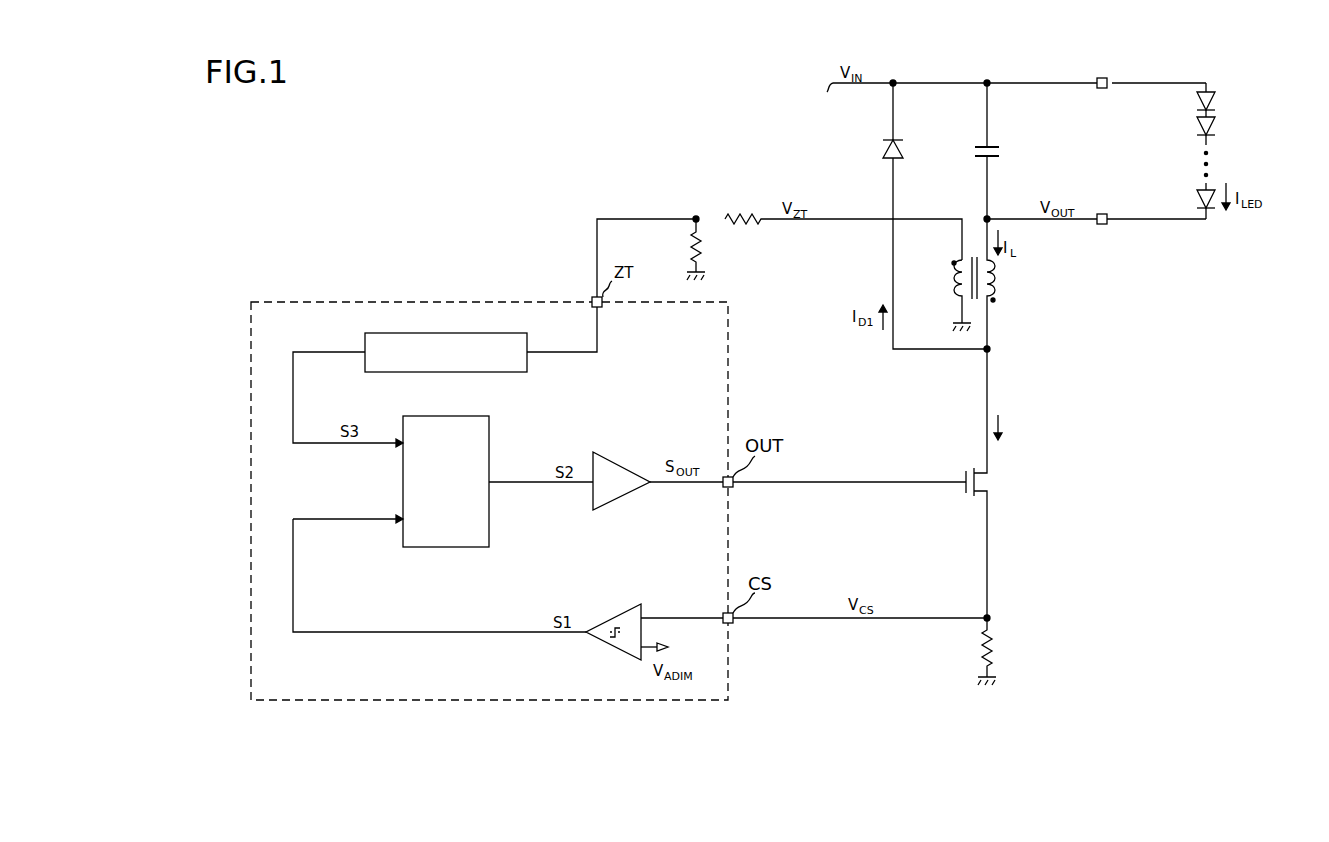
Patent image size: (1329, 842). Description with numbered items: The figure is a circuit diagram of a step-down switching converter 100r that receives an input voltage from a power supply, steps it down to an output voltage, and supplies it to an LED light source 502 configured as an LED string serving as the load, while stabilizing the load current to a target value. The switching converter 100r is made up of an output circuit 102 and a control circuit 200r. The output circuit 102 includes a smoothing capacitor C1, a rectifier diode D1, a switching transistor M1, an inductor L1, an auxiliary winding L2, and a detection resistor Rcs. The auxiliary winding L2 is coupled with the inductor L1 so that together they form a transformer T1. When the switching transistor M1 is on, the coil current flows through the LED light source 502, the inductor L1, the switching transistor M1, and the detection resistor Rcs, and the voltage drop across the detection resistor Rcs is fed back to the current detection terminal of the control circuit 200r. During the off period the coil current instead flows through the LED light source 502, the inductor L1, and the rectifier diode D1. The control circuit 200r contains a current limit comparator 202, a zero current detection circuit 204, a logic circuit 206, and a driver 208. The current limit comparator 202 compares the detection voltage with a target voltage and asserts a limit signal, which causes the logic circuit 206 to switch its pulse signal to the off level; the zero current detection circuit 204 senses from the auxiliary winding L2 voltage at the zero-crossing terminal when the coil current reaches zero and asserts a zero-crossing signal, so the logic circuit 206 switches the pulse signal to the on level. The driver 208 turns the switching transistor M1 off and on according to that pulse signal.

The switching converter 100r is at (239, 761).
The control circuit 200r is at (477, 700).
The output circuit 102 is at (964, 542).
The current limit comparator 202 is at (605, 660).
The zero current detection circuit 204 is at (453, 333).
The logic circuit 206 is at (447, 547).
The driver 208 is at (620, 510).
The LED light source 502 is at (1227, 149).
The rectifier diode D1 is at (906, 149).
The smoothing capacitor C1 is at (1004, 151).
The transformer T1 is at (974, 249).
The inductor L1 is at (998, 296).
The auxiliary winding L2 is at (948, 289).
The switching transistor M1 is at (993, 482).
The detection resistor Rcs is at (1013, 651).